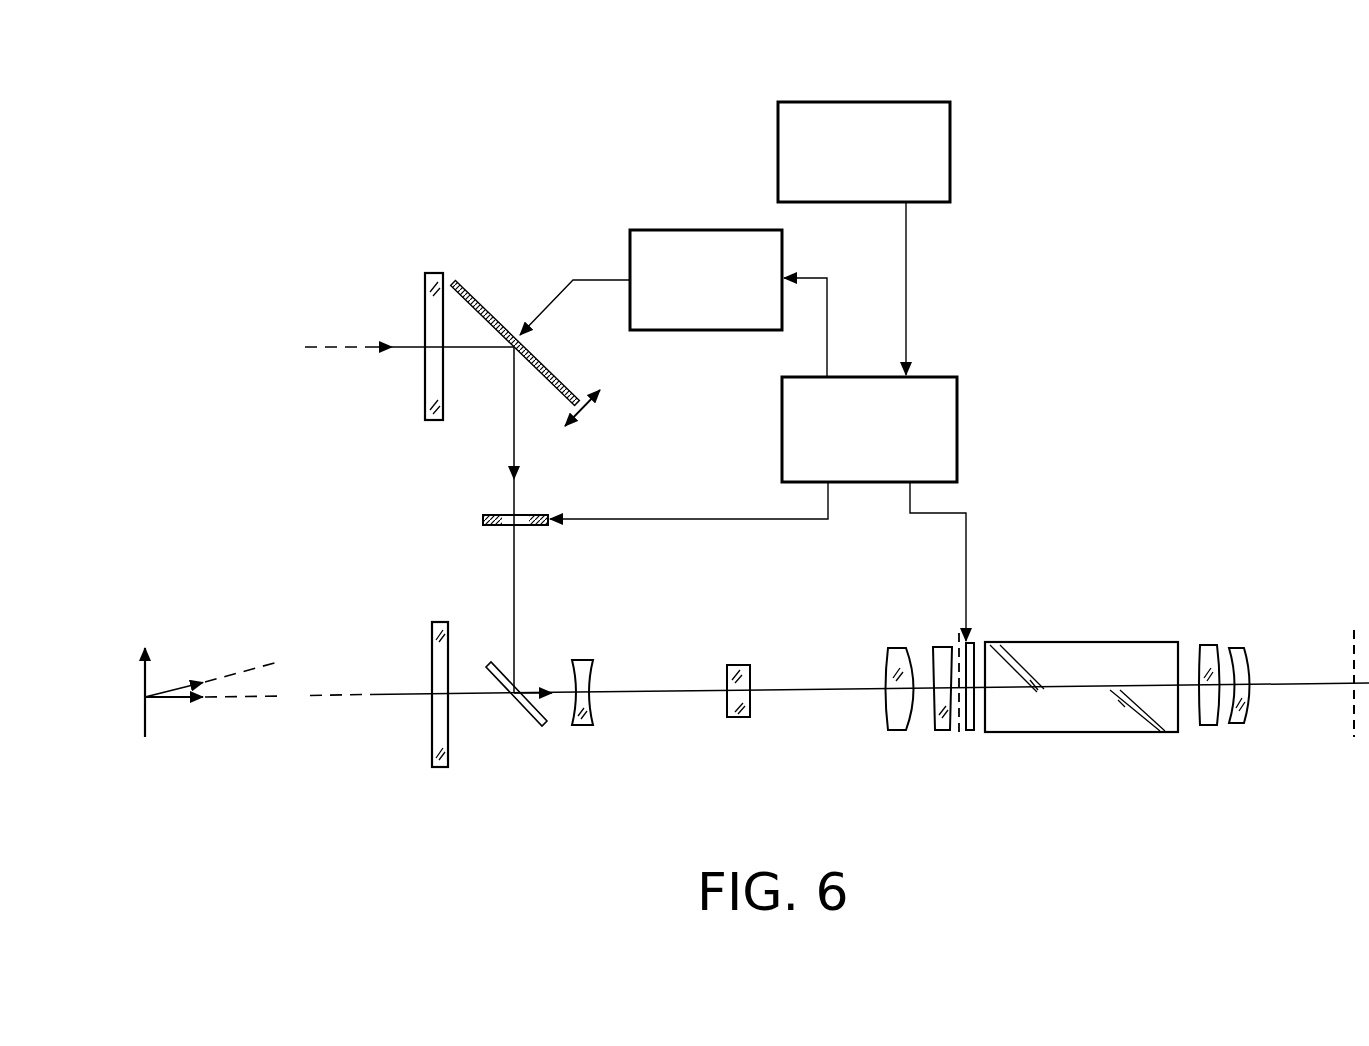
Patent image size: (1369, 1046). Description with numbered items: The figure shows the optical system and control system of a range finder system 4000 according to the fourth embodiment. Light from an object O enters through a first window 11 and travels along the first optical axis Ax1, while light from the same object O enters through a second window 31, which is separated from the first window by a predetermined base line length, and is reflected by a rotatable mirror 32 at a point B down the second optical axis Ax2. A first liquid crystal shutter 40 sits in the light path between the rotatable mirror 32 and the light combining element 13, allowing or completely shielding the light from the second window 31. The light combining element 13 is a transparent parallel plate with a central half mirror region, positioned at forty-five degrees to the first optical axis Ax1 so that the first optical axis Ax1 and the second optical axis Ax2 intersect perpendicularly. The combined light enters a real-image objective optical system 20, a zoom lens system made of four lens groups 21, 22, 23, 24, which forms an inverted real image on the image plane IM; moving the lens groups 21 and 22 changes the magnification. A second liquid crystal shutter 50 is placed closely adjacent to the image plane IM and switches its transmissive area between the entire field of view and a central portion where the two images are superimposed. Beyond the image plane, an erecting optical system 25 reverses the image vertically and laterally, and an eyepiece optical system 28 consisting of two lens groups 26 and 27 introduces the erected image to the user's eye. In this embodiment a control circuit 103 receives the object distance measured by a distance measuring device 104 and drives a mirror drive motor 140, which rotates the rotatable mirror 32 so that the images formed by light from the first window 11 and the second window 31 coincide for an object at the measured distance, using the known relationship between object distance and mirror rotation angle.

The first window 11 is at (438, 746).
The light combining element 13 is at (530, 733).
The real-image objective optical system 20 is at (955, 755).
The lens group 21 is at (585, 660).
The lens group 22 is at (737, 665).
The lens group 23 is at (893, 657).
The lens group 24 is at (945, 647).
The erecting optical system 25 is at (1092, 642).
The lens group 26 is at (1208, 645).
The lens group 27 is at (1240, 648).
The eyepiece optical system 28 is at (1261, 750).
The second window 31 is at (432, 272).
The rotatable mirror 32 is at (493, 317).
The first liquid crystal shutter 40 is at (483, 519).
The second liquid crystal shutter 50 is at (973, 643).
The control circuit 103 is at (957, 432).
The distance measuring device 104 is at (988, 178).
The mirror drive motor 140 is at (708, 196).
The range finder system 4000 is at (1168, 232).
The point B is at (508, 351).
The object O is at (145, 716).
The image plane IM is at (962, 739).
The first optical axis Ax1 is at (463, 694).
The second optical axis Ax2 is at (513, 437).